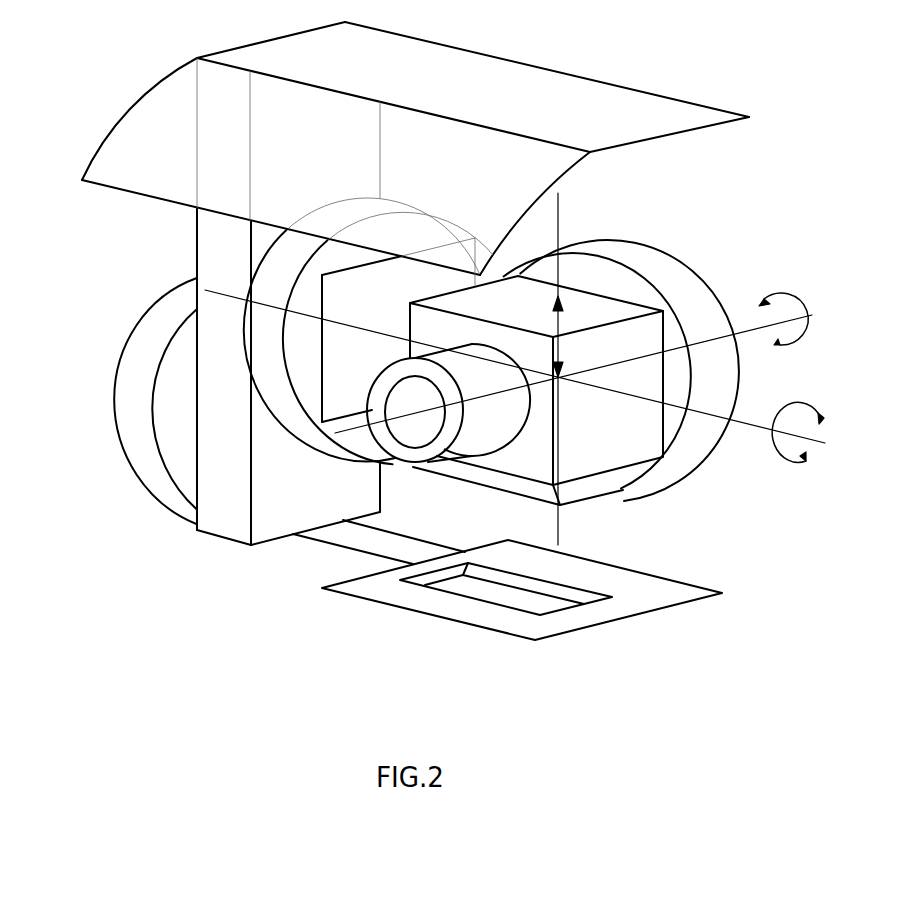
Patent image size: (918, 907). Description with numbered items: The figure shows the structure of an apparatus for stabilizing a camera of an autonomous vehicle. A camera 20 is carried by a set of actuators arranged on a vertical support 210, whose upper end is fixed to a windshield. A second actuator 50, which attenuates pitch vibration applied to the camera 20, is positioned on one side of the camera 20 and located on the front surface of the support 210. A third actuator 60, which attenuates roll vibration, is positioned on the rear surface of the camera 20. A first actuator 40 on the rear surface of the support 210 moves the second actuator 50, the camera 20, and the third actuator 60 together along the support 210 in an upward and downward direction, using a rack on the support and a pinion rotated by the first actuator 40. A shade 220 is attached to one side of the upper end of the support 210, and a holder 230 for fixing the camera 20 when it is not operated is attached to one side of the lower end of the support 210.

The camera 20 is at (607, 458).
The first actuator 40 is at (128, 394).
The second actuator 50 is at (275, 269).
The third actuator 60 is at (680, 268).
The support 210 is at (225, 527).
The shade 220 is at (128, 129).
The holder 230 is at (608, 612).